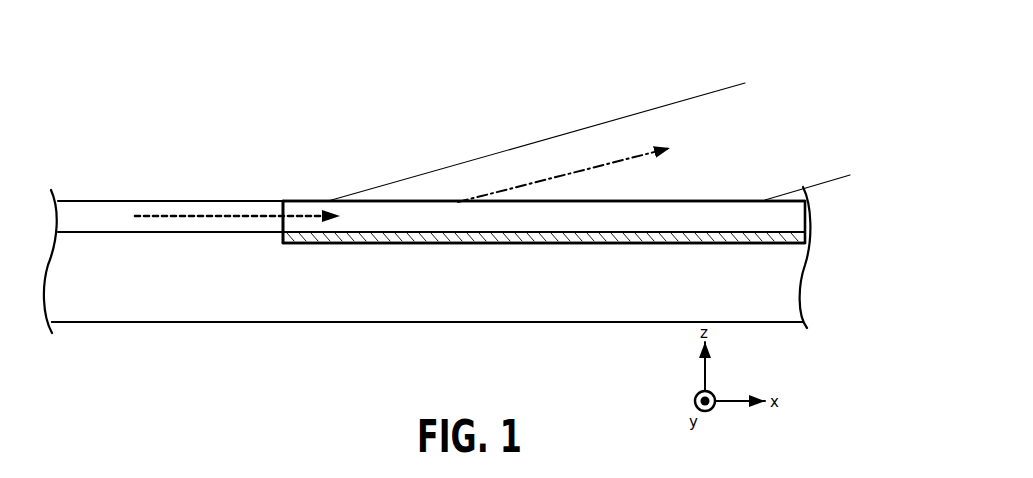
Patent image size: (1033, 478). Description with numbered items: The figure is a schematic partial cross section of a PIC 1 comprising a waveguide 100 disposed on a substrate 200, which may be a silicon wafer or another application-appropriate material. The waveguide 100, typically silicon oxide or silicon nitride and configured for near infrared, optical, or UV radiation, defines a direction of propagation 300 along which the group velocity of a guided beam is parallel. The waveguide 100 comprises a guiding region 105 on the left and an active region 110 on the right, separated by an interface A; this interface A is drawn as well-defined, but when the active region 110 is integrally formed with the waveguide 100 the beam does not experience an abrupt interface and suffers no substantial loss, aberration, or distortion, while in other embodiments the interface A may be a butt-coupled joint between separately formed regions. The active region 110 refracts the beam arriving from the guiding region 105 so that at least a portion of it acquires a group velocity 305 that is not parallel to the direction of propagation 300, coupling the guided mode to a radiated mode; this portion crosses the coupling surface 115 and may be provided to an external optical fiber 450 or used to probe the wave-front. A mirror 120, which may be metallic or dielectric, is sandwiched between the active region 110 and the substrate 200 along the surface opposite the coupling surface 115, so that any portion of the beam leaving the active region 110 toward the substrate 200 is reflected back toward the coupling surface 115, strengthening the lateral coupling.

The PIC 1 is at (529, 349).
The waveguide 100 is at (430, 142).
The guiding region 105 is at (87, 217).
The active region 110 is at (400, 217).
The coupling surface 115 is at (767, 200).
The mirror 120 is at (562, 237).
The substrate 200 is at (341, 309).
The direction of propagation 300 is at (175, 215).
The group velocity 305 is at (592, 167).
The external optical fiber 450 is at (735, 112).
The interface A is at (283, 201).